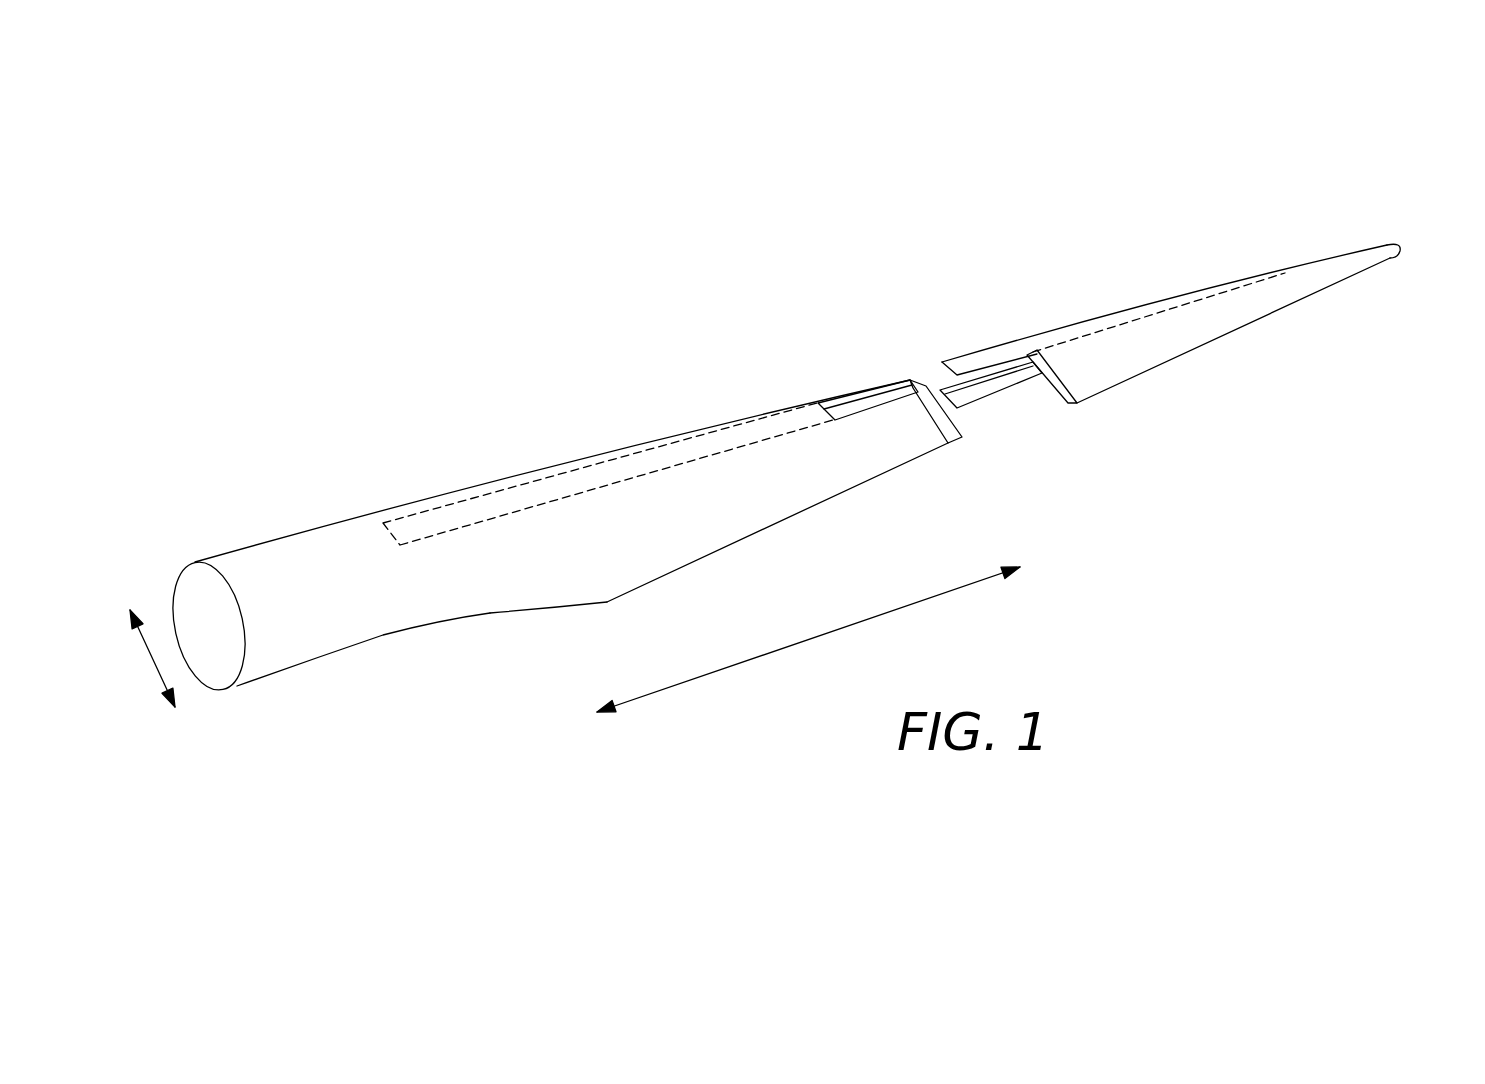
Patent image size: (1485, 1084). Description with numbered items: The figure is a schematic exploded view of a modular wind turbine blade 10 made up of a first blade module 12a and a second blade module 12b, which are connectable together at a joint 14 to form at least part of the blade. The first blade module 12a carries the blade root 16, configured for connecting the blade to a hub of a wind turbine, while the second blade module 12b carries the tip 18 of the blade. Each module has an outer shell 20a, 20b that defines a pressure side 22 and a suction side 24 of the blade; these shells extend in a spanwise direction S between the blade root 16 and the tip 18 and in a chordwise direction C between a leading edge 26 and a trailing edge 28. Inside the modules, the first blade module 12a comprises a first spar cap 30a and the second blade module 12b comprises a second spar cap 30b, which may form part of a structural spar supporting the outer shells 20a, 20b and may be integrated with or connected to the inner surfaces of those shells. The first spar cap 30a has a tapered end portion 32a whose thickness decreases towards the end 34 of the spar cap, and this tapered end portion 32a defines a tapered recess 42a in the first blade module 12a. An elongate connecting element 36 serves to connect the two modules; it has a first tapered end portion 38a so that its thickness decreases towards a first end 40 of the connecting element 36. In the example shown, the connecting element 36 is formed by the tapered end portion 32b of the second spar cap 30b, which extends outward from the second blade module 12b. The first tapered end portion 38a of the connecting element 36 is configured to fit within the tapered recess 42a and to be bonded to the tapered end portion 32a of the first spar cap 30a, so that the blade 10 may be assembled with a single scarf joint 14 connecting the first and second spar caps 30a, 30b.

The modular wind turbine blade 10 is at (345, 208).
The first blade module 12a is at (608, 375).
The second blade module 12b is at (1242, 243).
The joint 14 is at (912, 303).
The blade root 16 is at (195, 562).
The tip 18 is at (1402, 250).
The outer shell 20a is at (383, 612).
The outer shell 20b is at (1223, 327).
The pressure side 22 is at (767, 490).
The suction side 24 is at (533, 620).
The leading edge 26 is at (503, 480).
The trailing edge 28 is at (605, 602).
The first spar cap 30a is at (605, 473).
The second spar cap 30b is at (1105, 325).
The tapered end portion 32a is at (833, 375).
The tapered end portion 32b is at (1000, 333).
The end 34 is at (917, 383).
The elongate connecting element 36 is at (973, 333).
The first tapered end portion 38a is at (1030, 402).
The first end 40 is at (943, 362).
The tapered recess 42a is at (905, 383).
The chordwise direction C is at (153, 660).
The spanwise direction S is at (808, 638).